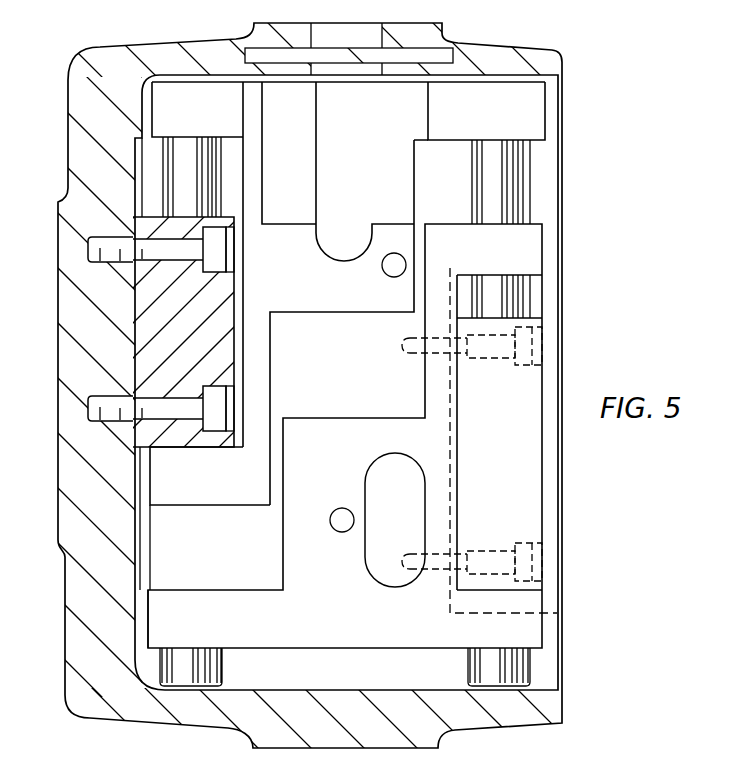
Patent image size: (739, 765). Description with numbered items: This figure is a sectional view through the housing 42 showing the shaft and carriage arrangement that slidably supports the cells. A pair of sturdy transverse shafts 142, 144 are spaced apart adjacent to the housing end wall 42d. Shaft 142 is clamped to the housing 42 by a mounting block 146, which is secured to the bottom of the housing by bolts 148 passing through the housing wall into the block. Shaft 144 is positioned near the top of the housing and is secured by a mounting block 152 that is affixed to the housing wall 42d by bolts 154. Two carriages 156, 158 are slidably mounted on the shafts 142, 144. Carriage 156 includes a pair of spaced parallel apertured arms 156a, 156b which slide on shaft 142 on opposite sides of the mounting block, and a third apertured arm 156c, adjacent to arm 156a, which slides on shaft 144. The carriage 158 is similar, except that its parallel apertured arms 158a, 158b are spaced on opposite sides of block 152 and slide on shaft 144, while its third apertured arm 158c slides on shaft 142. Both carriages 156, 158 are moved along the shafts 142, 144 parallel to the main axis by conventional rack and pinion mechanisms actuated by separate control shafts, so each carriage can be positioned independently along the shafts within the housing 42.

The housing 42 is at (86, 106).
The housing end wall 42d is at (513, 299).
The transverse shaft 142 is at (185, 182).
The transverse shaft 144 is at (490, 187).
The mounting block 146 is at (150, 297).
The bolts 148 is at (184, 260).
The mounting block 152 is at (514, 447).
The bolts 154 is at (503, 342).
The carriage 156 is at (306, 114).
The apertured arm 156a is at (223, 116).
The apertured arm 156b is at (210, 476).
The apertured arm 156c is at (498, 118).
The carriage 158 is at (406, 619).
The apertured arm 158a is at (498, 256).
The apertured arm 158b is at (513, 632).
The apertured arm 158c is at (185, 616).